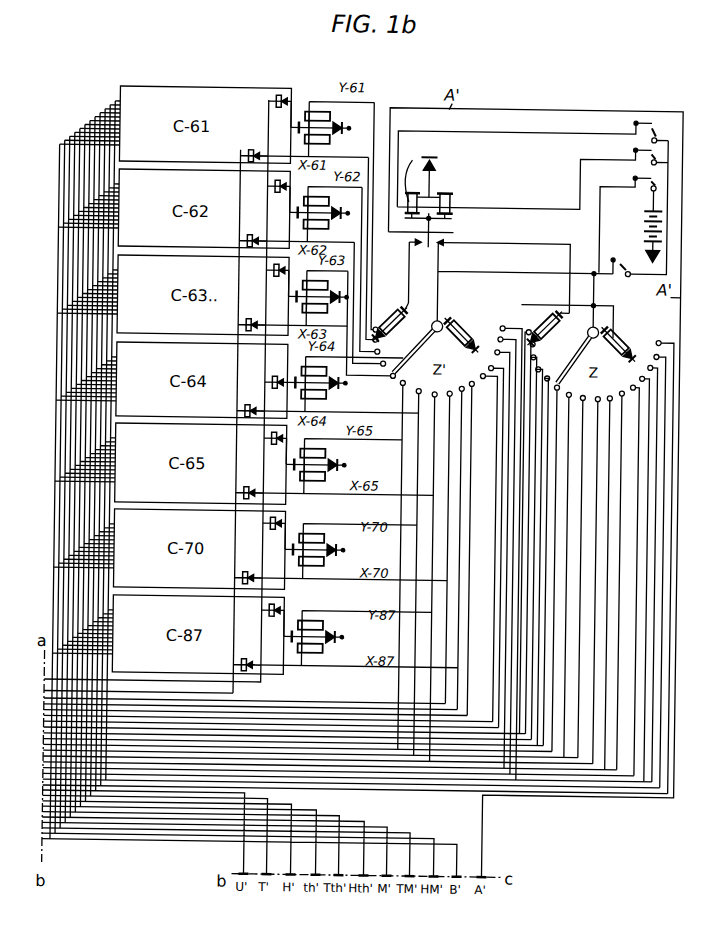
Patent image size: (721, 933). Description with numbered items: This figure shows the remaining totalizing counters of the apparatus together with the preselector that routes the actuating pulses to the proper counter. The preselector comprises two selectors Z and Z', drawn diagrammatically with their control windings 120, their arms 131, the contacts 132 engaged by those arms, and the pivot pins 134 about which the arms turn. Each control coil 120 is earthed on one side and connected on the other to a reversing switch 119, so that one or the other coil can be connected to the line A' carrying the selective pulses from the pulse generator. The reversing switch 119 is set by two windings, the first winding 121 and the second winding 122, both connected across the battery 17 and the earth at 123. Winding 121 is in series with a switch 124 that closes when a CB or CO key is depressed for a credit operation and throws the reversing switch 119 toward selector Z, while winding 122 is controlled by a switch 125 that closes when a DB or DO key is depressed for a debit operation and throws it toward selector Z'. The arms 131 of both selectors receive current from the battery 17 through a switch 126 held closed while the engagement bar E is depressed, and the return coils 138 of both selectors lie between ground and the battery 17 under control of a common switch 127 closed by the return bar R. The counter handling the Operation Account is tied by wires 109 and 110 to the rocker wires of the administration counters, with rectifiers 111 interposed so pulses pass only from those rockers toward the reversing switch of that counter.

The wire 109 is at (275, 383).
The wire 110 is at (241, 356).
The rectifier 111 is at (258, 487).
The reversing switch 119 is at (445, 258).
The control winding 120 is at (395, 307).
The first winding 121 is at (449, 192).
The second winding 122 is at (418, 171).
The earth 123 is at (439, 166).
The switch 124 is at (621, 143).
The switch 125 is at (604, 128).
The switch 126 is at (634, 208).
The common switch 127 is at (620, 189).
The arm 131 is at (418, 356).
The contact 132 is at (394, 330).
The pivot pin 134 is at (435, 320).
The return coil 138 is at (471, 317).
The battery 17 is at (639, 235).